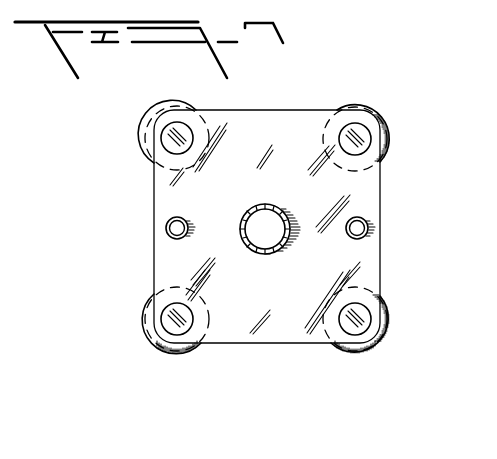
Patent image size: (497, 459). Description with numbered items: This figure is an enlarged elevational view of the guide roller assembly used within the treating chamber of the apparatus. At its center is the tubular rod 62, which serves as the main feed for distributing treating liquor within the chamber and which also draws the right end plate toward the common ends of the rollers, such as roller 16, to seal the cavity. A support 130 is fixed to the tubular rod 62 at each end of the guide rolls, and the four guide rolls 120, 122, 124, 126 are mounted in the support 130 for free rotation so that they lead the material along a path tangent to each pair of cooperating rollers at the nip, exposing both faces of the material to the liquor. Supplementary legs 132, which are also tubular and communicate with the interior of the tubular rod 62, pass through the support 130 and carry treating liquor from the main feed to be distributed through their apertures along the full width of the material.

The roller 16 is at (496, 12).
The tubular rod 62 is at (248, 206).
The guide roll 120 is at (385, 345).
The guide roll 122 is at (388, 118).
The guide roll 124 is at (147, 122).
The guide roll 126 is at (148, 340).
The support 130 is at (372, 257).
The supplementary leg 132 is at (166, 231).